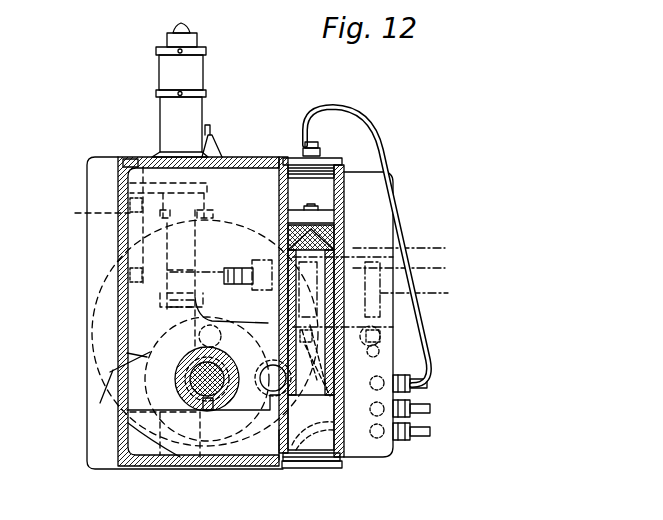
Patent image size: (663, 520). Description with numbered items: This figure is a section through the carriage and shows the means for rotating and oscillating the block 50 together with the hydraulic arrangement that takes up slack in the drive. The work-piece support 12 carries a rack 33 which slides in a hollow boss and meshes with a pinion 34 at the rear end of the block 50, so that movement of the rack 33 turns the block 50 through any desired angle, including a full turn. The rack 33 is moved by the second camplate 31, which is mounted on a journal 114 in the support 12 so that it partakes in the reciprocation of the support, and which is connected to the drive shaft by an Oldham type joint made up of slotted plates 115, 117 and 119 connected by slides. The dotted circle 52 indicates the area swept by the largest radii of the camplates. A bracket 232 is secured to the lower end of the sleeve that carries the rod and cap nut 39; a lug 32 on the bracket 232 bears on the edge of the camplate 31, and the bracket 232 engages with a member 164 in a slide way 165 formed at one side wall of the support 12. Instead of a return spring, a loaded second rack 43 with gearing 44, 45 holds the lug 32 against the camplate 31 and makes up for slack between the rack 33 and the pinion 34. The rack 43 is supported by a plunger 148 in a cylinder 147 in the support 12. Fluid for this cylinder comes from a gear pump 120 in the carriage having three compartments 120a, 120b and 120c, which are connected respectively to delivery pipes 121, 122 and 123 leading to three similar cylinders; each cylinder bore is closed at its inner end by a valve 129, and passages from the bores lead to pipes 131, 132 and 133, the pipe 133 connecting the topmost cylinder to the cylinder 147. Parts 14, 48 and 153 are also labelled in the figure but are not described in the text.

The work-piece support 12 is at (95, 177).
The bracket 14 is at (210, 130).
The second camplate 31 is at (256, 229).
The lug 32 is at (205, 215).
The rack 33 is at (196, 247).
The pinion 34 is at (222, 400).
The cap nut 39 is at (202, 68).
The rack 43 is at (311, 422).
The gearing 44 is at (298, 435).
The gearing 45 is at (279, 460).
The gear 48 is at (213, 410).
The block 50 is at (212, 410).
The dotted circle 52 is at (94, 333).
The journal 114 is at (214, 332).
The slotted plate 115 is at (147, 357).
The slotted plate 117 is at (110, 372).
The slotted plate 119 is at (100, 403).
The pump 120 is at (383, 313).
The pump compartment 120a is at (418, 238).
The pump compartment 120b is at (418, 265).
The pump compartment 120c is at (433, 290).
The delivery pipe 121 is at (314, 360).
The delivery pipe 122 is at (338, 350).
The delivery pipe 123 is at (381, 336).
The valve 129 is at (370, 410).
The pipe 131 is at (432, 432).
The pipe 132 is at (432, 409).
The pipe 133 is at (413, 221).
The cylinder 147 is at (267, 157).
The plunger 148 is at (320, 218).
The port 153 is at (379, 354).
The member 164 is at (143, 160).
The slide way 165 is at (133, 240).
The bracket 232 is at (86, 214).